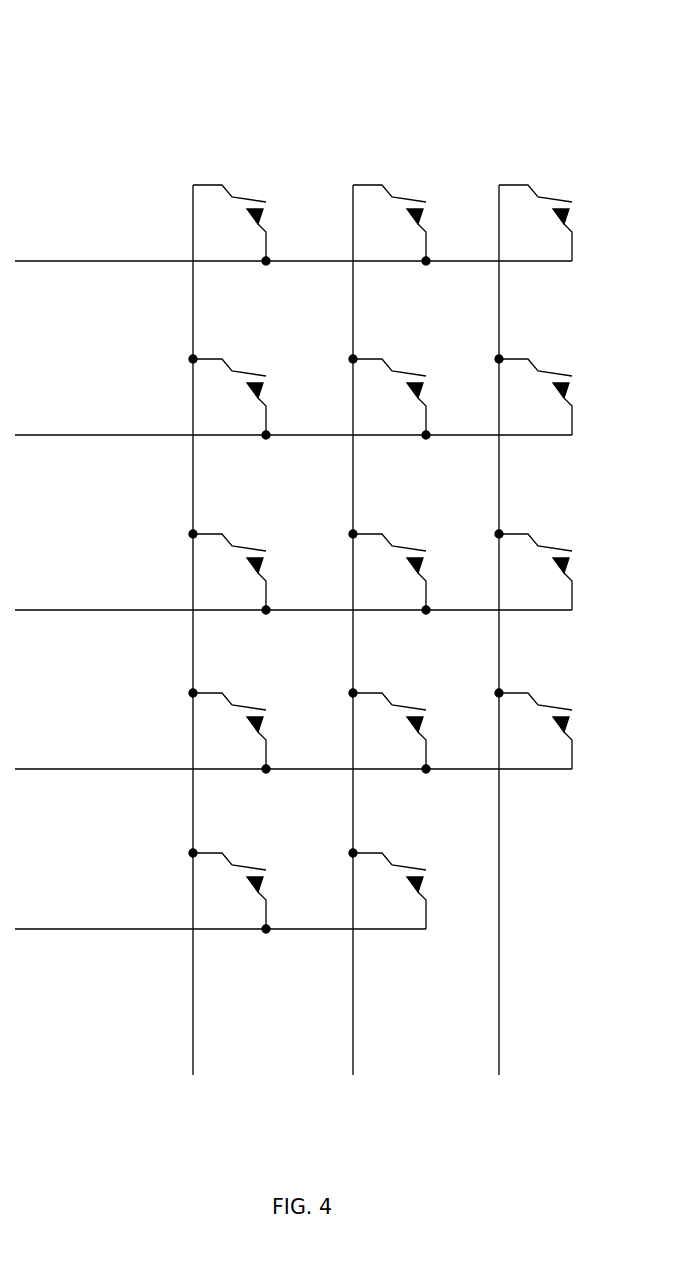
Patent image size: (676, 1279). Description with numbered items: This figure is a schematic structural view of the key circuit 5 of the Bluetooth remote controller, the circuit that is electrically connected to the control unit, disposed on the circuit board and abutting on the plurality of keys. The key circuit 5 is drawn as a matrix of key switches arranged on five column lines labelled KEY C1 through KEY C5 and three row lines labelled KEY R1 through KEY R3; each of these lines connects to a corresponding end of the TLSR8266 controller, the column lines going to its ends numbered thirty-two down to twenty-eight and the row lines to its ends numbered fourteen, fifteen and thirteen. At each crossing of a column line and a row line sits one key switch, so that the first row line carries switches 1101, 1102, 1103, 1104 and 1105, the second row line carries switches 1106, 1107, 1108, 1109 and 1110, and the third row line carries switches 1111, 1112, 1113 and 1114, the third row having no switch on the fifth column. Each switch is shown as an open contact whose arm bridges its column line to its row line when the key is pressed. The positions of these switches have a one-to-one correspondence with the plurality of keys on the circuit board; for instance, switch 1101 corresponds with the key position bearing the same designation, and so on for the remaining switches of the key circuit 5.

The key circuit 5 is at (228, 80).
The switch 1101 is at (231, 225).
The switch 1102 is at (229, 397).
The switch 1103 is at (229, 572).
The switch 1104 is at (229, 731).
The switch 1105 is at (229, 891).
The switch 1106 is at (391, 225).
The switch 1107 is at (389, 397).
The switch 1108 is at (389, 572).
The switch 1109 is at (389, 731).
The switch 1110 is at (387, 889).
The switch 1111 is at (535, 223).
The switch 1112 is at (533, 395).
The switch 1113 is at (533, 570).
The switch 1114 is at (533, 729).